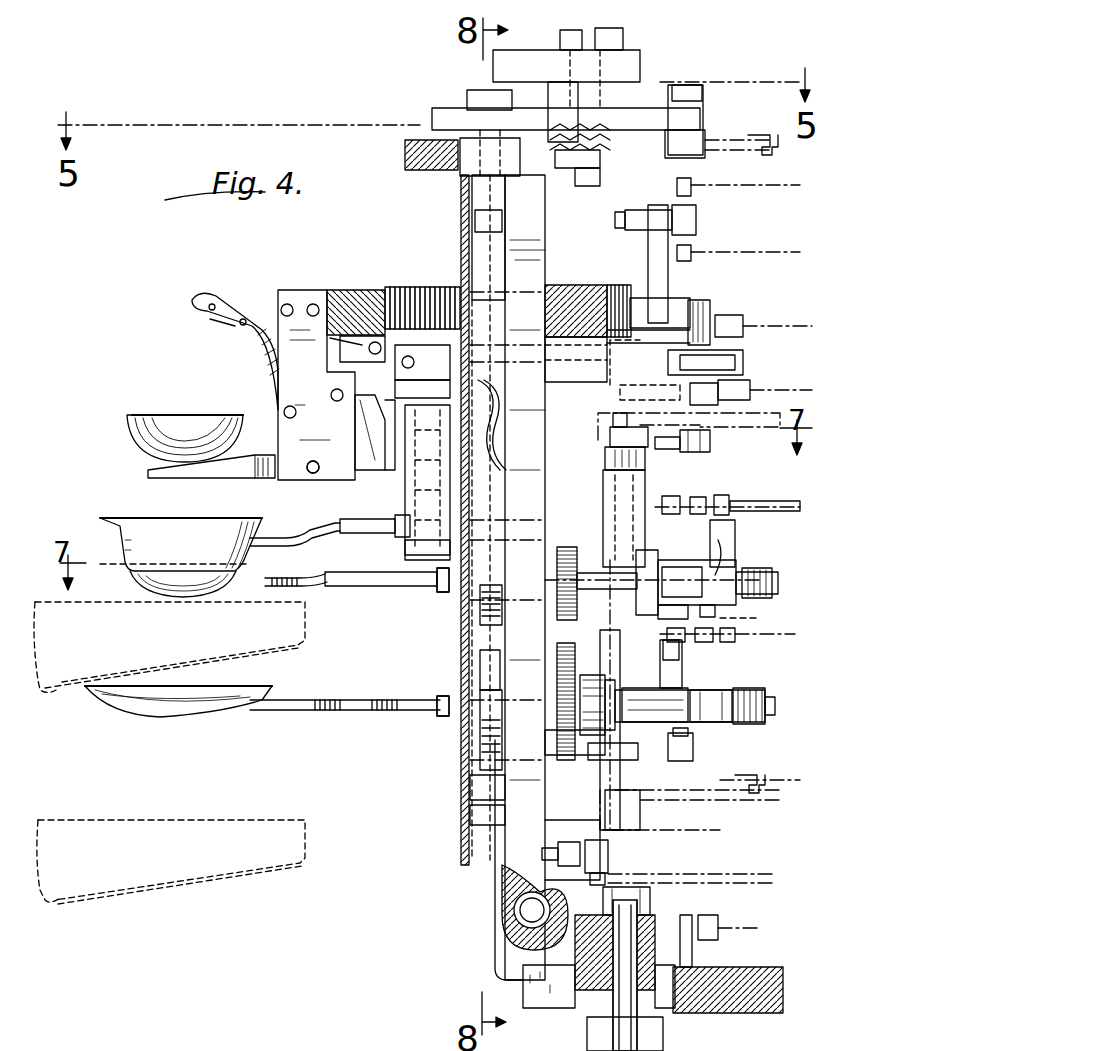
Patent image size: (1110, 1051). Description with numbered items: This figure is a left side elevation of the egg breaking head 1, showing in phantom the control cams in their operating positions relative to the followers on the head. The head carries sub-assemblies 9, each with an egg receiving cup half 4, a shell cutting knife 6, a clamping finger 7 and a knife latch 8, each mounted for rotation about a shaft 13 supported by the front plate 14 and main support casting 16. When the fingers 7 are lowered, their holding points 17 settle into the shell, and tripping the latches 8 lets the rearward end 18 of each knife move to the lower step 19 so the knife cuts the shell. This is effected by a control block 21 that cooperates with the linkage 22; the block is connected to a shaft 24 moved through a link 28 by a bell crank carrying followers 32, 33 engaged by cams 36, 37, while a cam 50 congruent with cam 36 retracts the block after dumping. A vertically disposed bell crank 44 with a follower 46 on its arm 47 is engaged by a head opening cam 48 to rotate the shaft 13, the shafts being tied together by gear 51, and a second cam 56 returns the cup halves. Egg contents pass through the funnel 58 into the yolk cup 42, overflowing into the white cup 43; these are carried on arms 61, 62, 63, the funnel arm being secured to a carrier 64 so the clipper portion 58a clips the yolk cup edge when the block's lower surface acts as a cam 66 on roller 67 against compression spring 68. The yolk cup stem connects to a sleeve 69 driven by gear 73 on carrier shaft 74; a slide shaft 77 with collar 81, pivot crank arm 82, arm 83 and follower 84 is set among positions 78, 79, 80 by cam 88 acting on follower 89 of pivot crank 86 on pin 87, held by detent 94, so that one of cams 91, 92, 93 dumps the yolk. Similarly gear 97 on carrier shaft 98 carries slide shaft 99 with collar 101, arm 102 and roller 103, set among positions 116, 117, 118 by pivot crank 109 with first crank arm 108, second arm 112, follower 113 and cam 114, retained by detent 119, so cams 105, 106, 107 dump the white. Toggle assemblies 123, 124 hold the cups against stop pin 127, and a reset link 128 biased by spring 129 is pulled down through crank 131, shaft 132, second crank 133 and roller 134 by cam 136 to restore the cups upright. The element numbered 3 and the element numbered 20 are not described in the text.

The egg breaking head 1 is at (156, 392).
The bottle support 3 is at (92, 522).
The egg receiving cup halves 4 is at (135, 440).
The shell cutting knives 6 is at (240, 480).
The clamping fingers 7 is at (238, 306).
The knife latches 8 is at (385, 445).
The sub-assemblies 9 is at (258, 387).
The shaft 13 is at (335, 292).
The front plate 14 is at (460, 835).
The main support casting 16 is at (535, 255).
The holding points 17 is at (242, 328).
The rearward end of knife 18 is at (358, 440).
The lower step 19 is at (355, 465).
The coil spring 20 is at (430, 285).
The control block 21 is at (350, 292).
The linkage 22 is at (350, 345).
The shaft 24 is at (650, 372).
The link 28 is at (745, 362).
The follower 32 is at (712, 316).
The follower 33 is at (700, 398).
The cam 36 is at (760, 318).
The cam 37 is at (765, 385).
The yolk cup 42 is at (150, 578).
The white cup 43 is at (160, 712).
The bell crank 44 is at (645, 258).
The follower 46 is at (697, 222).
The arm 47 is at (668, 270).
The head opening cam 48 is at (692, 183).
The cam 50 is at (750, 340).
The gear 51 is at (612, 285).
The second cam 56 is at (775, 248).
The funnel 58 is at (150, 533).
The clipper portion 58a is at (200, 566).
The funnel arm 61 is at (315, 532).
The yolk cup stem 62 is at (352, 555).
The white cup stem 63 is at (345, 692).
The carrier 64 is at (408, 558).
The cam 66 is at (416, 379).
The roller 67 is at (428, 389).
The compression spring 68 is at (405, 488).
The sleeve 69 is at (440, 598).
The gear 73 is at (570, 547).
The carrier shaft 74 is at (775, 583).
The slide shaft 77 is at (680, 562).
The position 78 is at (666, 619).
The position 79 is at (712, 610).
The position 80 is at (741, 616).
The collar 81 is at (600, 573).
The pivot crank arm 82 is at (660, 548).
The radially extending arm 83 is at (735, 540).
The follower 84 is at (735, 515).
The pivot crank 86 is at (603, 497).
The pin 87 is at (605, 448).
The cam 88 is at (665, 450).
The follower 89 is at (612, 428).
The cam 91 is at (671, 505).
The cam 92 is at (698, 505).
The cam 93 is at (721, 505).
The spring pressed detent 94 is at (740, 560).
The gear 97 is at (580, 672).
The carrier shaft 98 is at (768, 712).
The slide shaft 99 is at (642, 725).
The collar 101 is at (597, 705).
The radially extending arm 102 is at (685, 678).
The roller 103 is at (678, 650).
The cam 105 is at (664, 636).
The cam 106 is at (720, 645).
The cam 107 is at (770, 650).
The first crank arm 108 is at (621, 754).
The pivot crank 109 is at (610, 642).
The second arm 112 is at (695, 762).
The follower 113 is at (690, 795).
The cam 114 is at (730, 765).
The position 116 is at (740, 690).
The position 117 is at (695, 722).
The position 118 is at (775, 702).
The detent 119 is at (665, 696).
The over center toggle assembly 123 is at (480, 606).
The over center toggle assembly 124 is at (480, 740).
The stop pin 127 is at (480, 668).
The reset link 128 is at (478, 760).
The spring 129 is at (500, 410).
The crank 131 is at (470, 780).
The shaft 132 is at (470, 808).
The second crank 133 is at (610, 846).
The roller 134 is at (630, 885).
The cam 136 is at (655, 890).